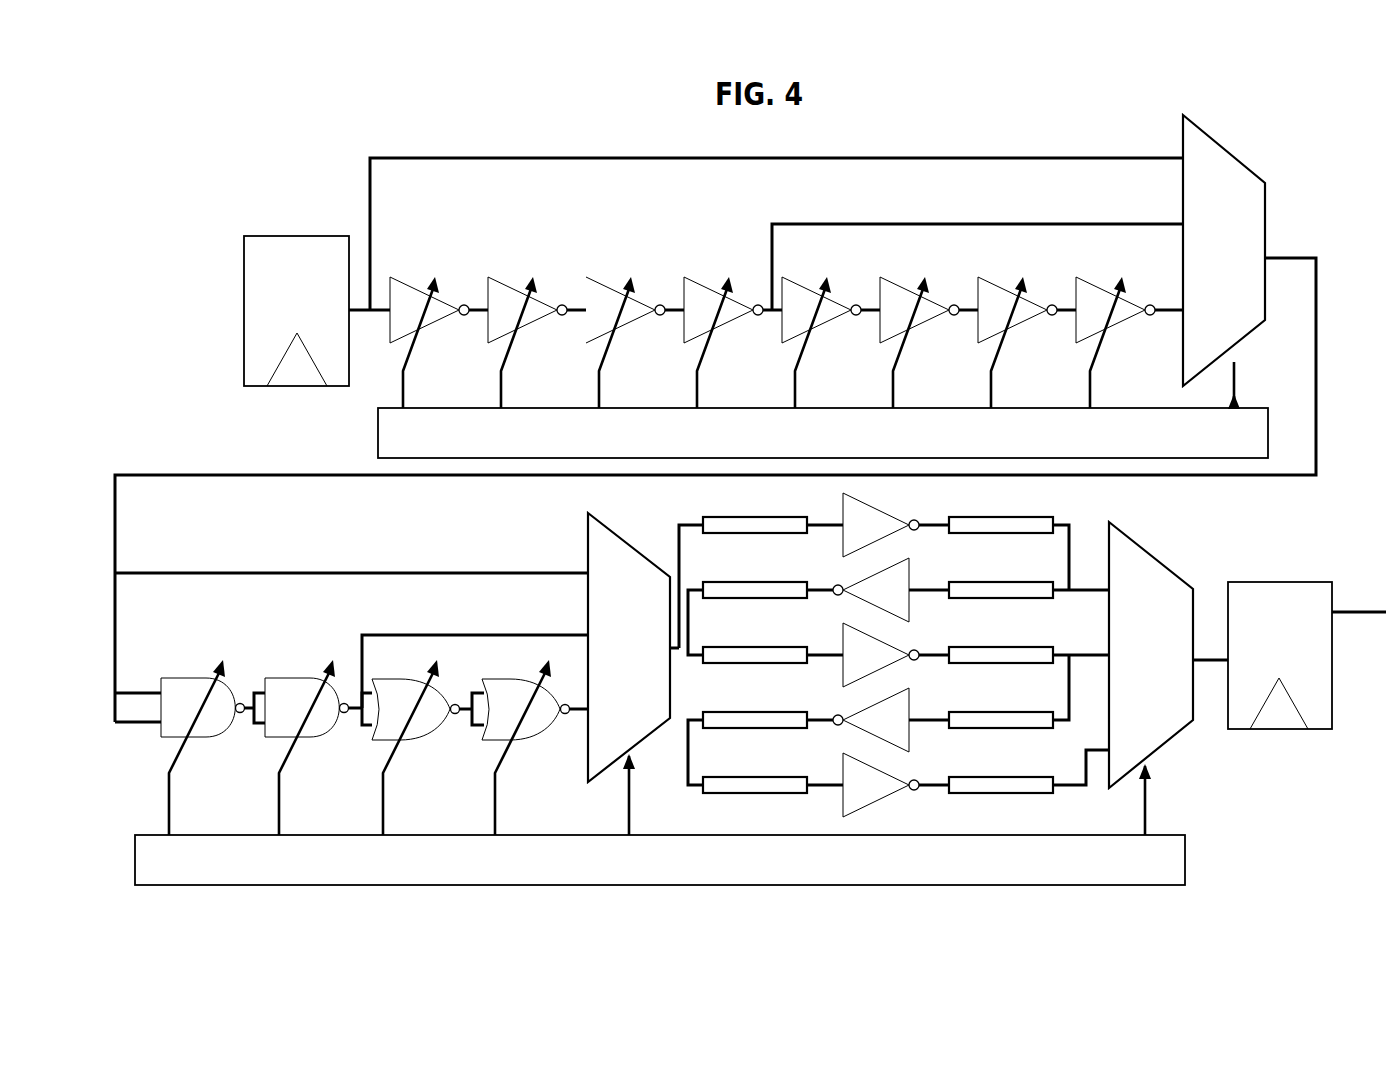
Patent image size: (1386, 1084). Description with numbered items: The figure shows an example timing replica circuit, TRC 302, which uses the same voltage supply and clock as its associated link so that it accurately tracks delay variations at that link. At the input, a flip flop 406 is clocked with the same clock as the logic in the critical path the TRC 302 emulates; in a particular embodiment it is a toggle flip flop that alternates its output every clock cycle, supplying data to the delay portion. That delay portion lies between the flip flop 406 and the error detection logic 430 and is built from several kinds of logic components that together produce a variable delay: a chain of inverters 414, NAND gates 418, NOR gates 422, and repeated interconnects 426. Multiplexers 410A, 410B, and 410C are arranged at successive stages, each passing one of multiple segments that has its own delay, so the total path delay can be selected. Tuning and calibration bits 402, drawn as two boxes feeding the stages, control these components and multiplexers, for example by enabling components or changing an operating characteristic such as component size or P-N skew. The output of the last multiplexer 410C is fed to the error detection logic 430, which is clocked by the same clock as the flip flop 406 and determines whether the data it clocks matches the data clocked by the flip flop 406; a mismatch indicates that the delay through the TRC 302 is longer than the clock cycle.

The TRC 302 is at (128, 102).
The tuning and calibration bits 402 is at (378, 415).
The flip flop 406 is at (244, 295).
The multiplexer 410A is at (1238, 160).
The multiplexer 410B is at (613, 533).
The last multiplexer 410C is at (1150, 553).
The inverters 414 is at (503, 282).
The NAND gates 418 is at (168, 678).
The NOR gates 422 is at (385, 678).
The repeated interconnects 426 is at (762, 517).
The error detection logic 430 is at (1287, 730).